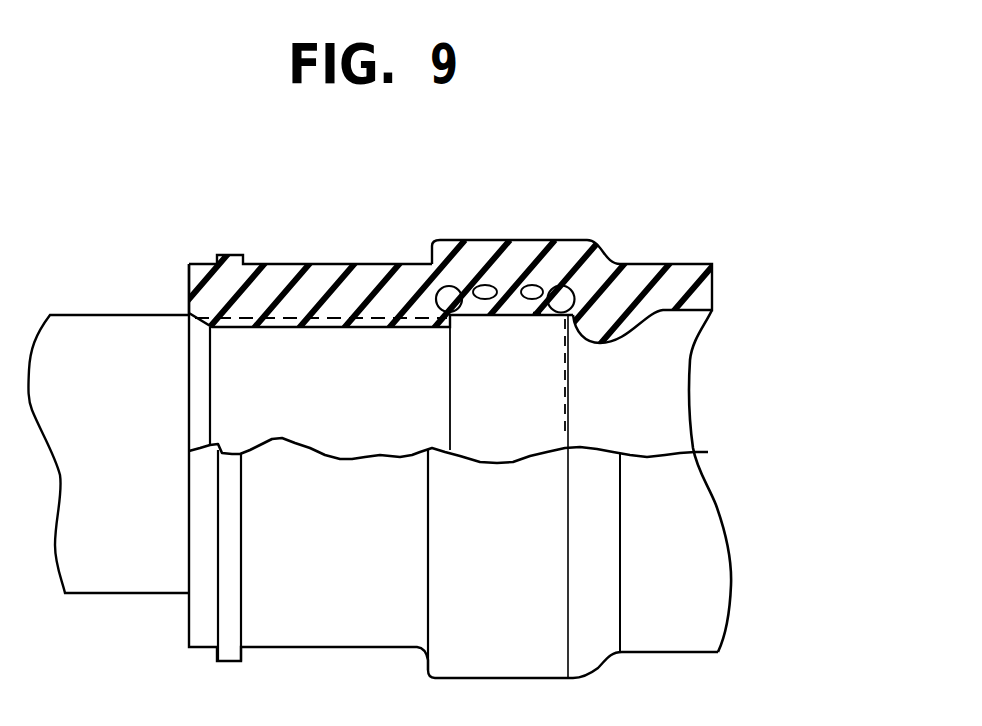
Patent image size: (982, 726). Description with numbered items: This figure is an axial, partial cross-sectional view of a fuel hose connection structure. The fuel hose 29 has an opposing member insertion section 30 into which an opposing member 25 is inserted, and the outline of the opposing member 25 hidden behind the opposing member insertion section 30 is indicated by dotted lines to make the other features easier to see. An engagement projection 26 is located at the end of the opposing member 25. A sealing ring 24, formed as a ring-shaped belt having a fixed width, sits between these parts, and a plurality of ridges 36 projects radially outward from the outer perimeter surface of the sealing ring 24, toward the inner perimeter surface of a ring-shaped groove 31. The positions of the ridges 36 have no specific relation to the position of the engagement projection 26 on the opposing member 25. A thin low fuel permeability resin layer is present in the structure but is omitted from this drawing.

The sealing ring 24 is at (489, 316).
The opposing member 25 is at (568, 400).
The engagement projection 26 is at (538, 313).
The fuel hose 29 is at (676, 266).
The opposing member insertion section 30 is at (290, 265).
The ring-shaped groove 31 is at (466, 290).
The ridges 36 is at (500, 290).